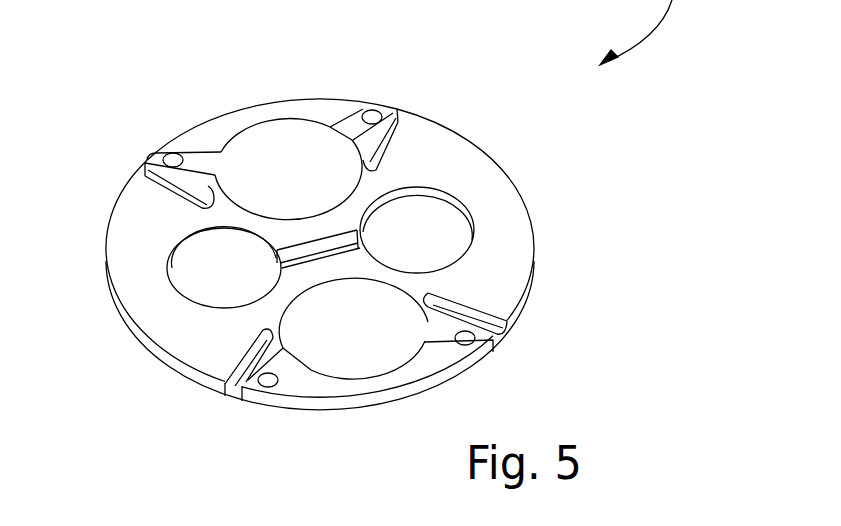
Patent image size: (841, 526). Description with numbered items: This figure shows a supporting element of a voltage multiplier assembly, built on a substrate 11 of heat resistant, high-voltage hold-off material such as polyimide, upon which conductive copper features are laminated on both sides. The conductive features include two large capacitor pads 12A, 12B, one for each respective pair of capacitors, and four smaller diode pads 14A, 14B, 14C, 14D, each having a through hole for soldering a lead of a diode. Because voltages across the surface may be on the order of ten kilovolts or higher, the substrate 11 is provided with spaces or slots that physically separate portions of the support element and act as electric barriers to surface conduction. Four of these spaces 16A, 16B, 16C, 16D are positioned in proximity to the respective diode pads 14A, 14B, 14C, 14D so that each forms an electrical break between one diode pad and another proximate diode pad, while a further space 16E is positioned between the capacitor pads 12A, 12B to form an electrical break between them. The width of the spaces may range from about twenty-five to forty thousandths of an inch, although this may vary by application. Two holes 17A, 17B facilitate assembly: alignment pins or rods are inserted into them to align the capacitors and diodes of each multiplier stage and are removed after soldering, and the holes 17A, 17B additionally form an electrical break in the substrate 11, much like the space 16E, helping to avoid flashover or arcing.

The substrate 11 is at (533, 263).
The capacitor pad 12A is at (360, 362).
The capacitor pad 12B is at (277, 128).
The diode pad 14A is at (265, 390).
The diode pad 14B is at (471, 342).
The diode pad 14C is at (173, 152).
The diode pad 14D is at (373, 110).
The space 16A is at (237, 392).
The space 16B is at (497, 327).
The space 16C is at (137, 176).
The space 16D is at (407, 120).
The space 16E is at (280, 262).
The hole 17A is at (180, 278).
The hole 17B is at (440, 218).